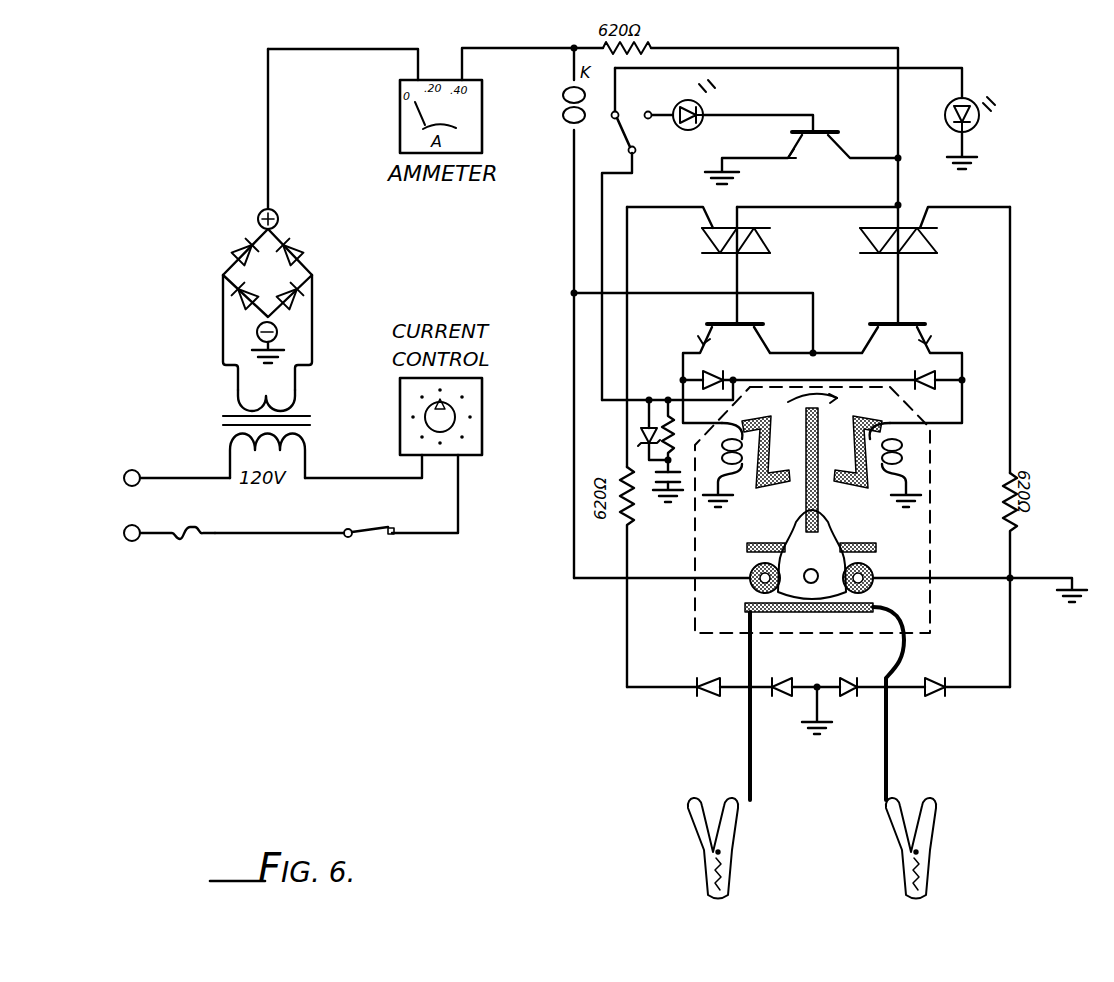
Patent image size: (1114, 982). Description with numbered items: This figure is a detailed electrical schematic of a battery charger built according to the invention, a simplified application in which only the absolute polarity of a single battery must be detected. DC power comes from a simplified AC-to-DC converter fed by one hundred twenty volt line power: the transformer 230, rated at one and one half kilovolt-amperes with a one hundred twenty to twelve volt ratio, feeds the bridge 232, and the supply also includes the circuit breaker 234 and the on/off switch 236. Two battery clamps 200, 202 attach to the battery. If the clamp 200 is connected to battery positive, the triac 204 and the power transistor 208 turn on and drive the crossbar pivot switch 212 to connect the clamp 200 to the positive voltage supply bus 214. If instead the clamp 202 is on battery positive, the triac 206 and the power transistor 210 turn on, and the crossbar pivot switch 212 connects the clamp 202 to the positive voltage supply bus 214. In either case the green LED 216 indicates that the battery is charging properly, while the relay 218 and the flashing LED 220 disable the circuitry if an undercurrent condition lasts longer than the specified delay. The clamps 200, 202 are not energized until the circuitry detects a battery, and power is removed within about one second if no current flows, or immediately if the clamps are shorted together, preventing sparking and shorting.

The clamp 200 is at (946, 828).
The clamp 202 is at (688, 840).
The triac 204 is at (920, 256).
The triac 206 is at (760, 256).
The power transistor 208 is at (912, 320).
The power transistor 210 is at (749, 320).
The crossbar pivot switch 212 is at (932, 600).
The positive voltage supply bus 214 is at (268, 115).
The green LED 216 is at (978, 98).
The relay 218 is at (621, 107).
The flashing LED 220 is at (712, 104).
The transformer 230 is at (233, 401).
The bridge 232 is at (233, 249).
The circuit breaker 234 is at (183, 542).
The on/off switch 236 is at (380, 540).